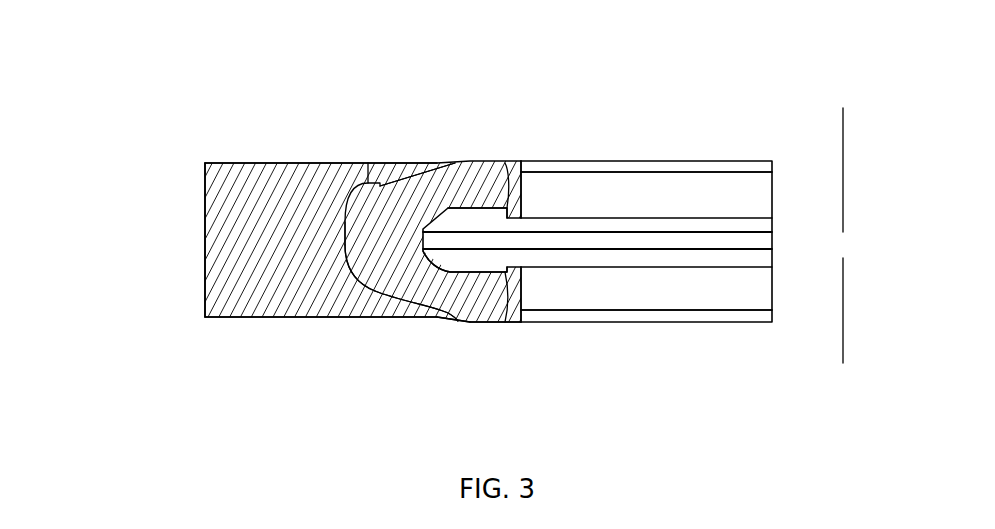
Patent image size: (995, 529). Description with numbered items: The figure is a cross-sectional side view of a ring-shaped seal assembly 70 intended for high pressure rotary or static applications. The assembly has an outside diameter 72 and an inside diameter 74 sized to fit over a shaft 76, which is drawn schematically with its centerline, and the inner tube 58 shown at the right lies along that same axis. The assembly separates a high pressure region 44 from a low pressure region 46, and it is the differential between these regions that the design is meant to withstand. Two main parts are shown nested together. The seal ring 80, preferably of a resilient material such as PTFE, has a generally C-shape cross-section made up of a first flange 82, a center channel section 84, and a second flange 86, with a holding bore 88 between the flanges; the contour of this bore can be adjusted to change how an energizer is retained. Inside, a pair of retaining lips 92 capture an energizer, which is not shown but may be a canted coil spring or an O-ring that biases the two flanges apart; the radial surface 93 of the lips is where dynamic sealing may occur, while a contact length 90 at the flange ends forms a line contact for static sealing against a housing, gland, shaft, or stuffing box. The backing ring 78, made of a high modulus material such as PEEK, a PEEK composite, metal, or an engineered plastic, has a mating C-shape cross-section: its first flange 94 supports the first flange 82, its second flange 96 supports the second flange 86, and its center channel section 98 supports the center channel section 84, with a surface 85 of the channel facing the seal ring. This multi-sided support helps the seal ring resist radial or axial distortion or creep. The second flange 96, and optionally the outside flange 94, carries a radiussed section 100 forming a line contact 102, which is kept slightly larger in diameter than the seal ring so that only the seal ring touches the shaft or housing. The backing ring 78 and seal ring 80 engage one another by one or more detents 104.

The high pressure region 44 is at (866, 313).
The low pressure region 46 is at (138, 251).
The inner tube 58 is at (518, 256).
The seal assembly 70 is at (275, 108).
The outside diameter 72 is at (205, 295).
The inside diameter 74 is at (678, 172).
The shaft 76 is at (843, 187).
The backing ring 78 is at (229, 161).
The seal ring 80 is at (597, 161).
The first flange 82 is at (457, 193).
The center channel section 84 is at (356, 252).
The seal lower surface 85 is at (397, 292).
The second flange 86 is at (503, 300).
The seal element 88 is at (423, 229).
The contact length 90 is at (500, 323).
The retaining lips 92 is at (511, 162).
The radial surface 93 is at (751, 172).
The first flange 94 is at (416, 163).
The second flange 96 is at (398, 303).
The center channel section 98 is at (216, 184).
The radiussed section 100 is at (440, 317).
The line contact 102 is at (468, 324).
The detent 104 is at (372, 163).